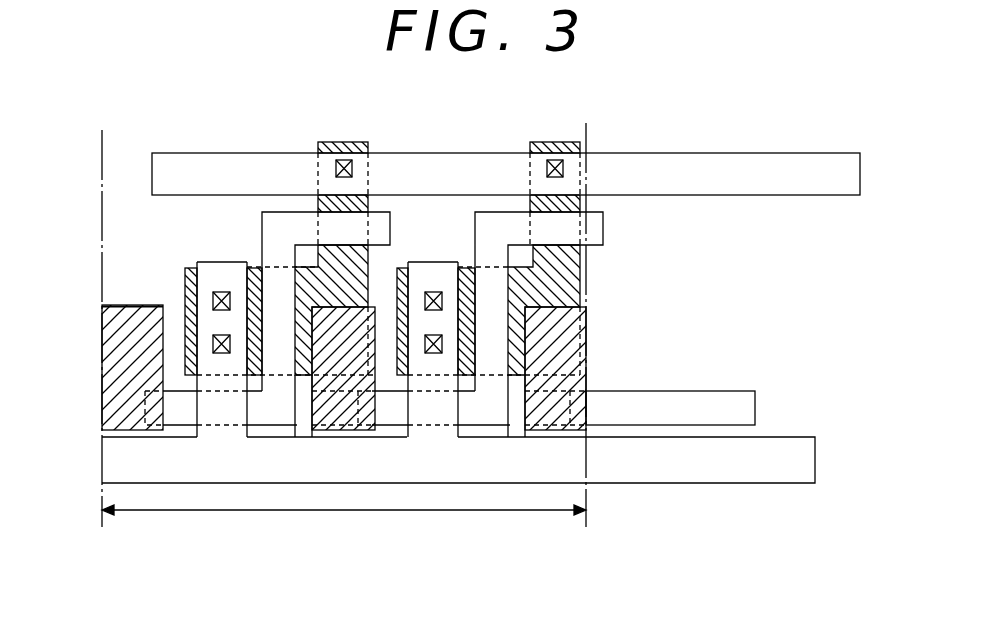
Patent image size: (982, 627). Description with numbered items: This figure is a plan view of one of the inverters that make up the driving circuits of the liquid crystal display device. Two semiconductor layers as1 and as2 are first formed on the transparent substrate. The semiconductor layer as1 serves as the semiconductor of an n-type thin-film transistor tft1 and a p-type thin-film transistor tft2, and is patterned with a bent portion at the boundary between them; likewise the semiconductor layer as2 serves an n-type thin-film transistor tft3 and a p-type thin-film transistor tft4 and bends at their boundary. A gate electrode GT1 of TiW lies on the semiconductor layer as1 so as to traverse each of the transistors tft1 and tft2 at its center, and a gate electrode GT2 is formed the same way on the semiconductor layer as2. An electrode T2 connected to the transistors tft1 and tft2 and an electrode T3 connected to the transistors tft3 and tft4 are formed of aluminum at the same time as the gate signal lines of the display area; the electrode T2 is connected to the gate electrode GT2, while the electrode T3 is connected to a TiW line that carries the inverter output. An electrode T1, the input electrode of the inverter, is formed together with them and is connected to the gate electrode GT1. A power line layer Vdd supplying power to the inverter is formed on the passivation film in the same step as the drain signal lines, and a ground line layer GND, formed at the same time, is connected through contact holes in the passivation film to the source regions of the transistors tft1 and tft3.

The power line layer Vdd is at (506, 174).
The ground line layer GND is at (458, 460).
The electrode T1 is at (147, 437).
The electrode T2 is at (346, 437).
The electrode T3 is at (548, 437).
The gate electrode GT1 is at (267, 437).
The gate electrode GT2 is at (478, 437).
The n-type thin-film transistor tft1 is at (252, 259).
The p-type thin-film transistor tft2 is at (382, 209).
The n-type thin-film transistor tft3 is at (513, 418).
The p-type thin-film transistor tft4 is at (603, 227).
The semiconductor layer as1 is at (185, 268).
The semiconductor layer as2 is at (587, 285).